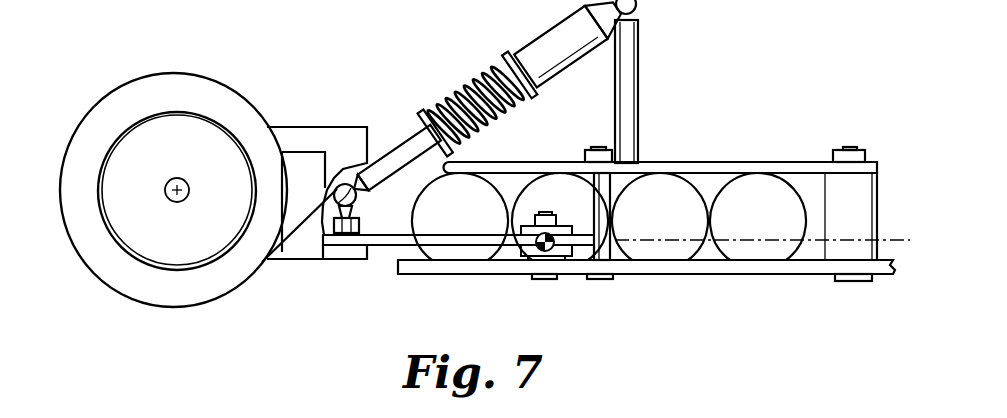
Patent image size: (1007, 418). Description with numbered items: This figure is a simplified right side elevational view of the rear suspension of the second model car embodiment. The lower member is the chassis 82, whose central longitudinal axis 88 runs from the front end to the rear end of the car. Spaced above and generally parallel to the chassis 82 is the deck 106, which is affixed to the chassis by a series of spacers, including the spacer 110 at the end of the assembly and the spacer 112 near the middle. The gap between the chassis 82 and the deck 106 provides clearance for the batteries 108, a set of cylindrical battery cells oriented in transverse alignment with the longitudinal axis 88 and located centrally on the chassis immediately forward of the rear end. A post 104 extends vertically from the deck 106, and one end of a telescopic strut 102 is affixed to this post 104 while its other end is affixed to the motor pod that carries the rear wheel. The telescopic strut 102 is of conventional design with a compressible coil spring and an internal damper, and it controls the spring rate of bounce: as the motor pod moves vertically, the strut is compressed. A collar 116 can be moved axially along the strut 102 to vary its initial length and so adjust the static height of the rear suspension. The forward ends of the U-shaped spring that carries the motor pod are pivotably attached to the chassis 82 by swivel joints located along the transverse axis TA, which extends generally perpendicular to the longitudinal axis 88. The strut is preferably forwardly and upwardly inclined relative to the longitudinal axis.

The chassis 82 is at (720, 267).
The central longitudinal axis 88 is at (873, 287).
The telescopic strut 102 is at (529, 38).
The post 104 is at (638, 43).
The deck 106 is at (730, 162).
The batteries 108 is at (441, 218).
The spacer 110 is at (877, 183).
The spacer 112 is at (613, 260).
The collar 116 is at (535, 98).
The transverse axis TA is at (527, 260).